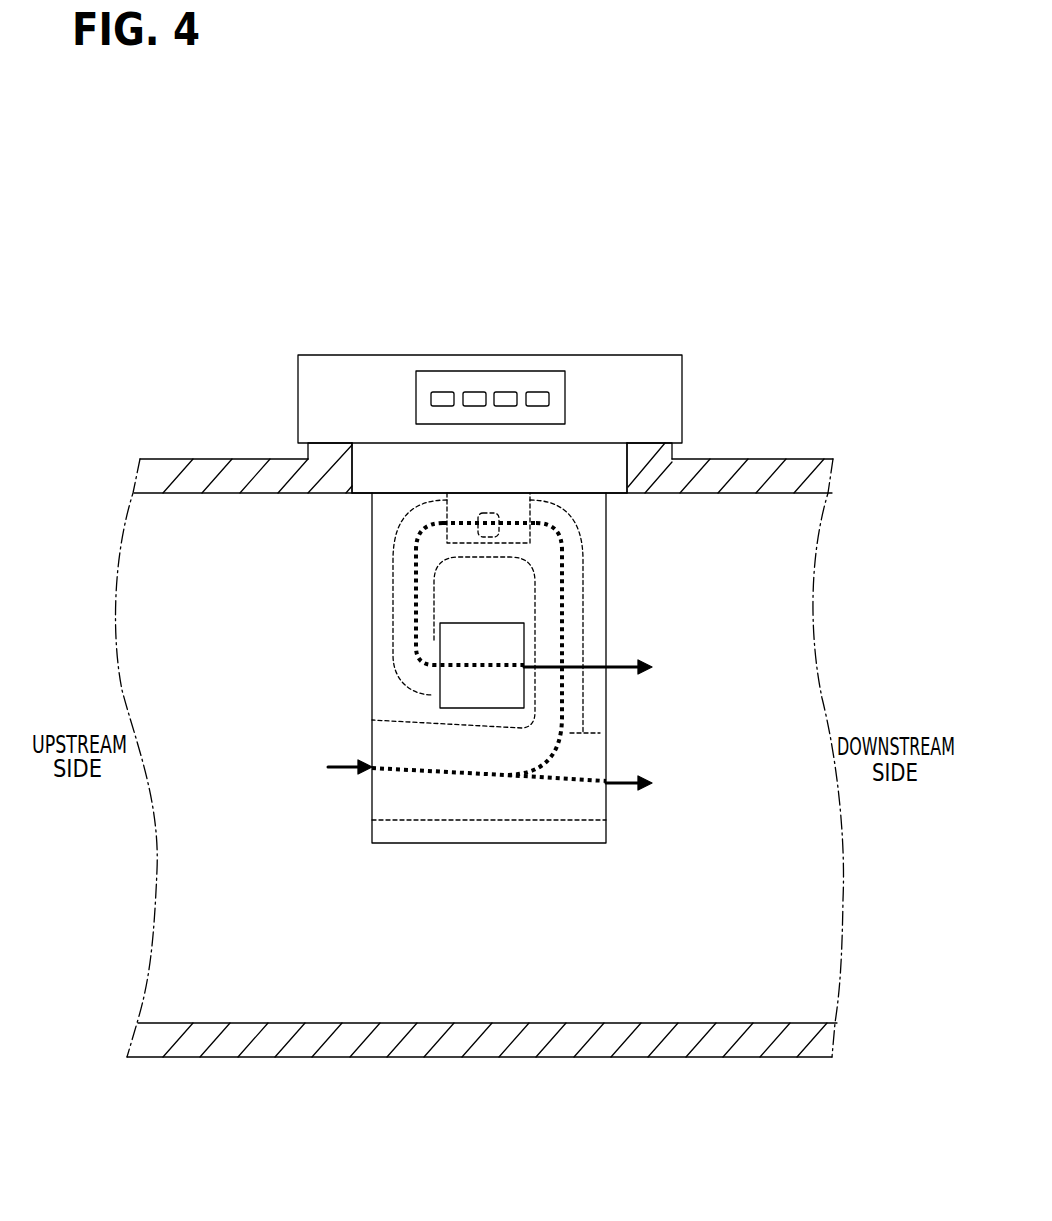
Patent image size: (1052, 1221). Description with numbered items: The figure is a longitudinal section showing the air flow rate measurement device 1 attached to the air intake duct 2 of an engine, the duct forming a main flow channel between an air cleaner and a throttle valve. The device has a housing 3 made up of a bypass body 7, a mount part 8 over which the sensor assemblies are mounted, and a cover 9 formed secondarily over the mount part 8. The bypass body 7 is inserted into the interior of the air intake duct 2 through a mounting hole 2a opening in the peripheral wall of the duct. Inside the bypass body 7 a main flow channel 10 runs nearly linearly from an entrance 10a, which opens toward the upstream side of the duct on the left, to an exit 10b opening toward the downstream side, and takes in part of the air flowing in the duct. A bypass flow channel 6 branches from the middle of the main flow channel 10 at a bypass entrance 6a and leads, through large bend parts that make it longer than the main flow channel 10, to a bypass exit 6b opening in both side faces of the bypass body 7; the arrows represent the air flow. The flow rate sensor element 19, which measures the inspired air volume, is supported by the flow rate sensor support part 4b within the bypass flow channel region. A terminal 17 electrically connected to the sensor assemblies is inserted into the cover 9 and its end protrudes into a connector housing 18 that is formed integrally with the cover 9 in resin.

The air flow rate measurement device 1 is at (636, 305).
The air intake duct 2 is at (207, 470).
The mounting hole 2a is at (353, 473).
The housing 3 is at (729, 307).
The flow rate sensor support part 4b is at (443, 522).
The bypass flow channel 6 is at (583, 600).
The bypass entrance 6a is at (583, 735).
The bypass exit 6b is at (524, 683).
The bypass body 7 is at (620, 500).
The mount part 8 is at (597, 463).
The cover 9 is at (635, 380).
The main flow channel 10 is at (447, 808).
The entrance 10a is at (372, 792).
The exit 10b is at (606, 800).
The terminal 17 is at (473, 395).
The connector housing 18 is at (457, 378).
The flow rate sensor element 19 is at (488, 512).